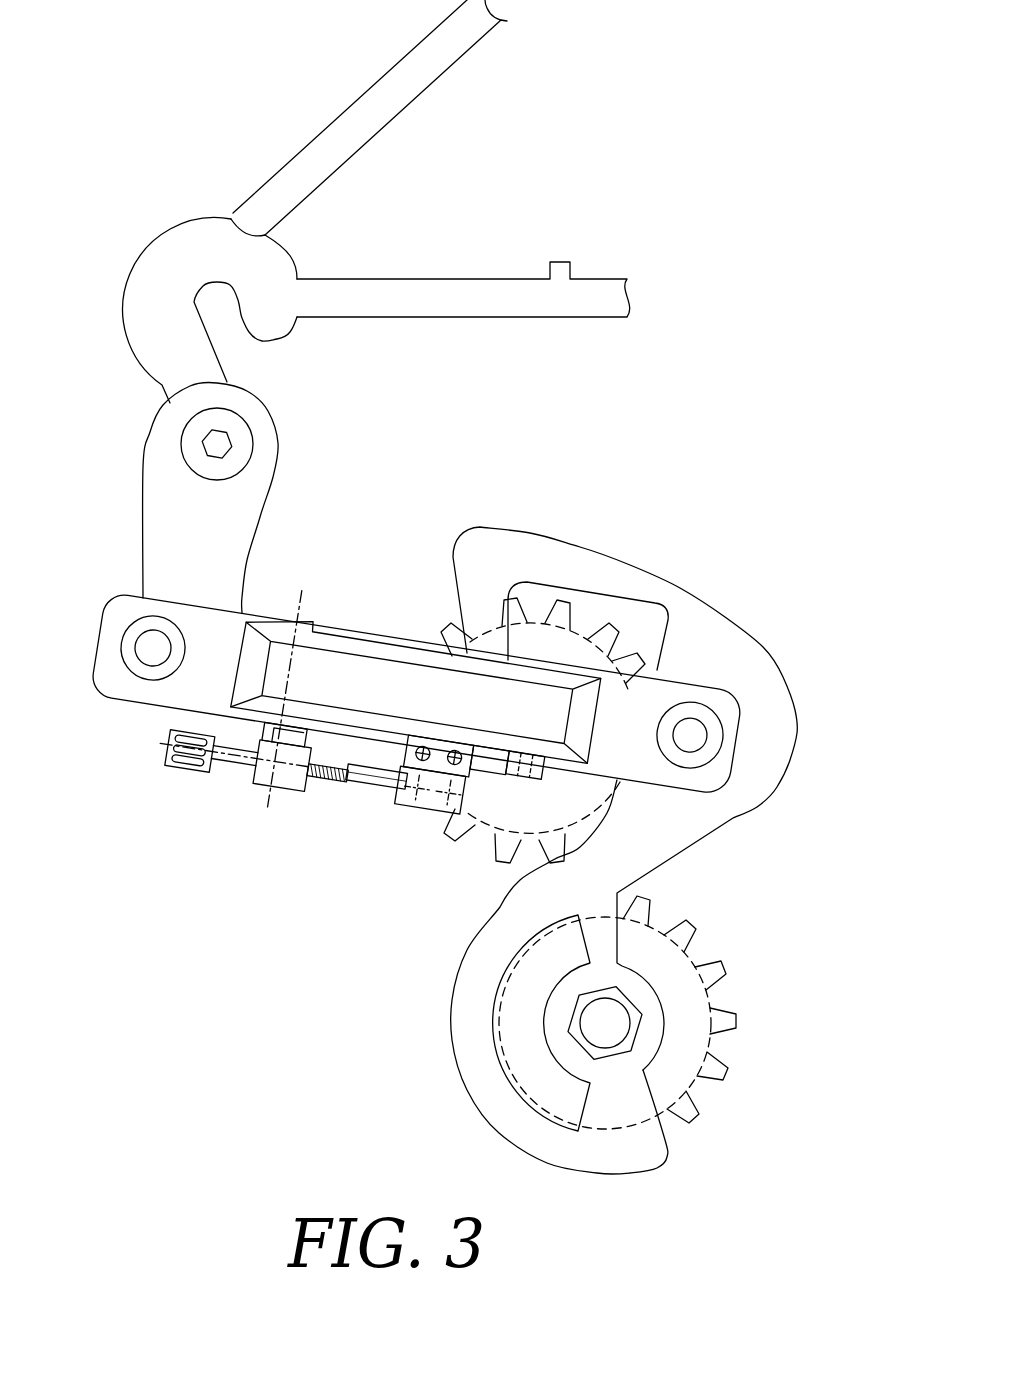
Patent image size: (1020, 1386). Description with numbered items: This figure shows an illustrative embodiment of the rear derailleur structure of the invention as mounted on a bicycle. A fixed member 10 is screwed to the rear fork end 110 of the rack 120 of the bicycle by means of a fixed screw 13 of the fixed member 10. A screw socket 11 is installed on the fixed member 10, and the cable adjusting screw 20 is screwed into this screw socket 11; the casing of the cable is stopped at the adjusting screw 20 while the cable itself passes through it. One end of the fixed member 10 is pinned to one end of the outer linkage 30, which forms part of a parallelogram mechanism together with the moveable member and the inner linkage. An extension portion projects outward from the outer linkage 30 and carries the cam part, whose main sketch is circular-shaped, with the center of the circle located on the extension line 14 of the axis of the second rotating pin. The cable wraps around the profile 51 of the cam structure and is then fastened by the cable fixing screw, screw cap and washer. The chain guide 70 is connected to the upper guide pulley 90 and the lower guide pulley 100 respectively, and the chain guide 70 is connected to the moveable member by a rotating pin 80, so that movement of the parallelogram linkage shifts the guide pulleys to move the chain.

The fixed member 10 is at (157, 520).
The screw socket 11 is at (285, 777).
The fixed screw 13 is at (217, 443).
The extension line of the axis of the second rotating pin 14 is at (303, 615).
The cable adjusting screw 20 is at (183, 765).
The outer linkage 30 is at (363, 660).
The profile of the cam structure 51 is at (373, 787).
The chain guide 70 is at (497, 547).
The rotating pin 80 is at (700, 717).
The upper guide pulley 90 is at (572, 612).
The lower guide pulley 100 is at (657, 1021).
The rear fork end 110 is at (275, 272).
The rack 120 is at (373, 290).